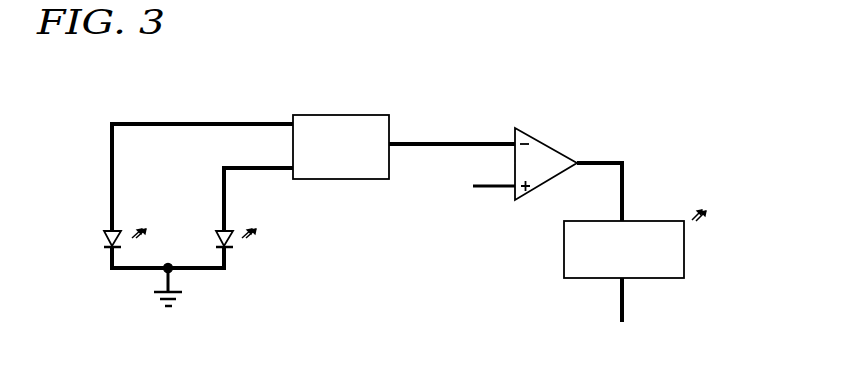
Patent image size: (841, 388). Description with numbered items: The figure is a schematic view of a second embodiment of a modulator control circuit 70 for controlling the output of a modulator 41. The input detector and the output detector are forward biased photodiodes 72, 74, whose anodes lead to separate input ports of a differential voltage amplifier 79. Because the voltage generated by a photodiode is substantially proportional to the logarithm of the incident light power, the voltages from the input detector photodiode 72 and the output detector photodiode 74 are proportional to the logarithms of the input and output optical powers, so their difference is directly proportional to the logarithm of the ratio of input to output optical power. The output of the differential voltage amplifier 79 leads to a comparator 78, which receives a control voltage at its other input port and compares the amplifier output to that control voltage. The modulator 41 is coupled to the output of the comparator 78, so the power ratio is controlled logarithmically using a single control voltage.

The modulator control circuit 70 is at (474, 86).
The input detector photodiode 72 is at (104, 240).
The output detector photodiode 74 is at (216, 240).
The differential voltage amplifier 79 is at (354, 114).
The comparator 78 is at (551, 141).
The modulator 41 is at (685, 250).